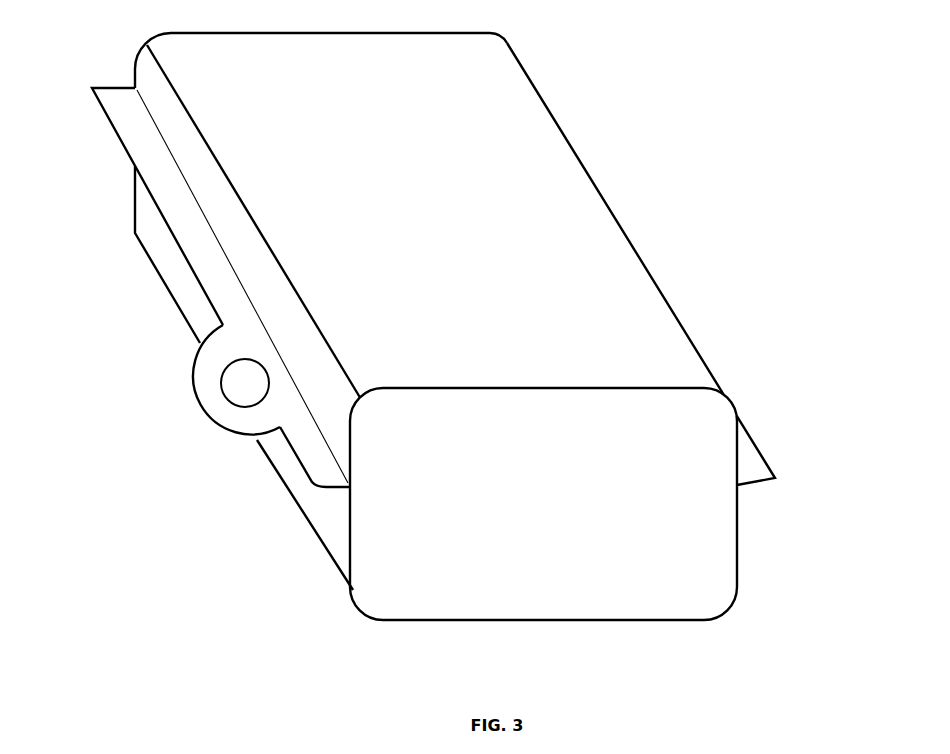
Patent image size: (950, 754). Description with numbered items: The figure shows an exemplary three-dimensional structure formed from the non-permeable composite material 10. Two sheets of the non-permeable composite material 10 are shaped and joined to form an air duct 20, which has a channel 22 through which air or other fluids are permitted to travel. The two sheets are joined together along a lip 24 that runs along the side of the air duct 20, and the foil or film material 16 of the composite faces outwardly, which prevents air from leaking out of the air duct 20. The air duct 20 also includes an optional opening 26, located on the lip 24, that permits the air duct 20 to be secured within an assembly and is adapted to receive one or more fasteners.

The non-permeable composite material 10 is at (557, 158).
The foil or film material 16 is at (643, 258).
The air duct 20 is at (832, 204).
The channel 22 is at (438, 578).
The lip 24 is at (125, 128).
The opening 26 is at (240, 385).